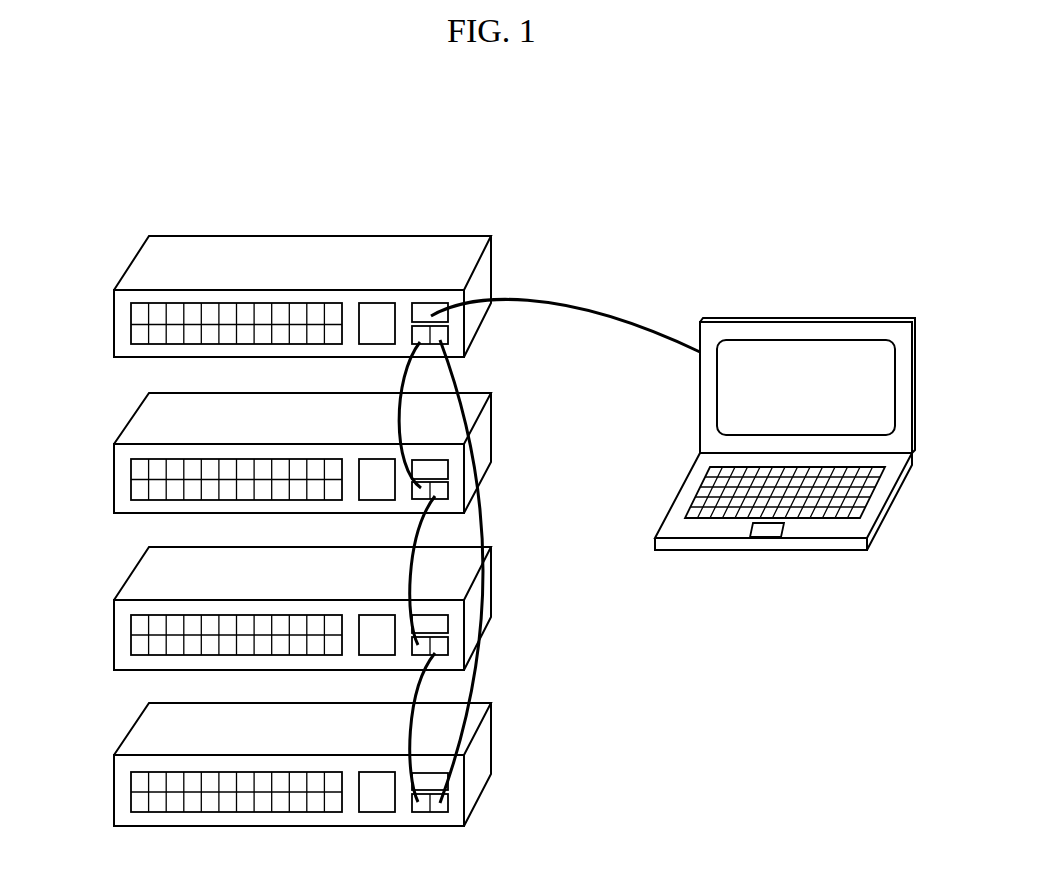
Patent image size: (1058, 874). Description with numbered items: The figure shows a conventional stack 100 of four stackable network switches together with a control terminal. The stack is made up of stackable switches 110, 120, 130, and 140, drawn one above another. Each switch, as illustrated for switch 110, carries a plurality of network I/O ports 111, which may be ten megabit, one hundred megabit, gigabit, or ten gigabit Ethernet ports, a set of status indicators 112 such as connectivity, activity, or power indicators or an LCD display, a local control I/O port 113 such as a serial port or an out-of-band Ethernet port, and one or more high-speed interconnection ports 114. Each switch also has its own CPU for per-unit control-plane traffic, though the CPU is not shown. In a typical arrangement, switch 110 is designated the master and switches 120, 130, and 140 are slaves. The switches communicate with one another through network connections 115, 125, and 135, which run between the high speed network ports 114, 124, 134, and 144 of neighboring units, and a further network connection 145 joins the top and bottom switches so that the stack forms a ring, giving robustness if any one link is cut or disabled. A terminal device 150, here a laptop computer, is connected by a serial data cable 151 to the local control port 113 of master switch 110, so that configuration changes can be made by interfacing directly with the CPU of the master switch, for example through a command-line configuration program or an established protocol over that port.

The stack 100 is at (647, 140).
The stackable switch 110 is at (134, 259).
The network I/O ports 111 is at (243, 303).
The status indicators 112 is at (373, 303).
The local control I/O port 113 is at (436, 303).
The high-speed interconnection port 114 is at (449, 331).
The network connection 115 is at (403, 379).
The stackable switch 120 is at (134, 416).
The high speed network port 124 is at (449, 488).
The network connection 125 is at (403, 534).
The stackable switch 130 is at (134, 570).
The high speed network port 134 is at (449, 646).
The network connection 135 is at (403, 689).
The stackable switch 140 is at (134, 726).
The high speed network port 144 is at (449, 803).
The network connection 145 is at (483, 532).
The terminal device 150 is at (847, 318).
The management cable 151 is at (547, 297).